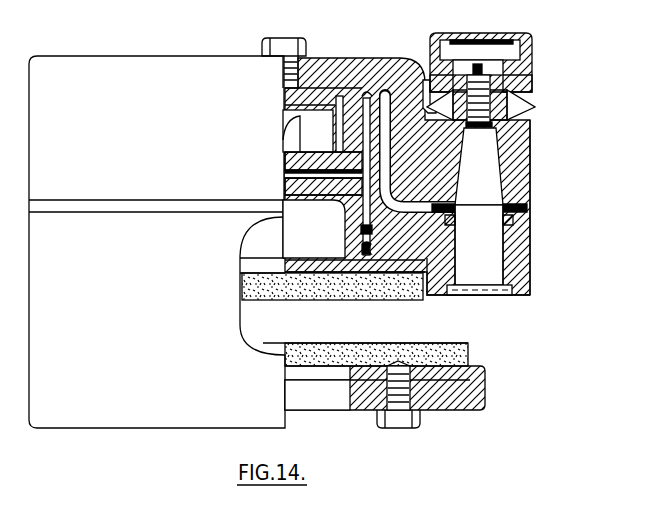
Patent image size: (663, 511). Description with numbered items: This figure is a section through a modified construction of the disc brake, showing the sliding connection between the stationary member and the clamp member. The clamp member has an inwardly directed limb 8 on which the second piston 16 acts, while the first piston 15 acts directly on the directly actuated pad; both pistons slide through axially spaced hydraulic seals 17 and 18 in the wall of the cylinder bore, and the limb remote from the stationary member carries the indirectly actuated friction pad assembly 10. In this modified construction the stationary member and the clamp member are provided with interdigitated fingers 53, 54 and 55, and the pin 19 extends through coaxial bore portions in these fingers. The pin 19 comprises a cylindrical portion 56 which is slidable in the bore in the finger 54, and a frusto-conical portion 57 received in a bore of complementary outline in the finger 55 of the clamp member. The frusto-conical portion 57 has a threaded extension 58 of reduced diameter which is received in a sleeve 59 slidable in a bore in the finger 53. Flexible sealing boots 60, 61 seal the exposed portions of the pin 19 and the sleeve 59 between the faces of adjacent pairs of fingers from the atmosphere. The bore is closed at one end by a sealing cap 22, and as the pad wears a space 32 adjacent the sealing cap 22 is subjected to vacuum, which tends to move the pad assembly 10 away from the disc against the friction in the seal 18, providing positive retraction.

The limb 8 is at (382, 62).
The indirectly actuated friction pad assembly 10 is at (452, 372).
The first piston 15 is at (295, 186).
The second piston 16 is at (300, 160).
The hydraulic seal 17 is at (330, 116).
The hydraulic seal 18 is at (362, 230).
The pin 19 is at (480, 236).
The sealing cap 22 is at (470, 298).
The space 32 is at (497, 298).
The finger 53 is at (517, 52).
The finger 54 is at (523, 256).
The finger 55 is at (510, 179).
The cylindrical portion 56 is at (487, 272).
The frusto-conical portion 57 is at (485, 166).
The threaded extension 58 is at (503, 96).
The sleeve 59 is at (505, 65).
The flexible sealing boot 60 is at (522, 208).
The flexible sealing boot 61 is at (520, 118).